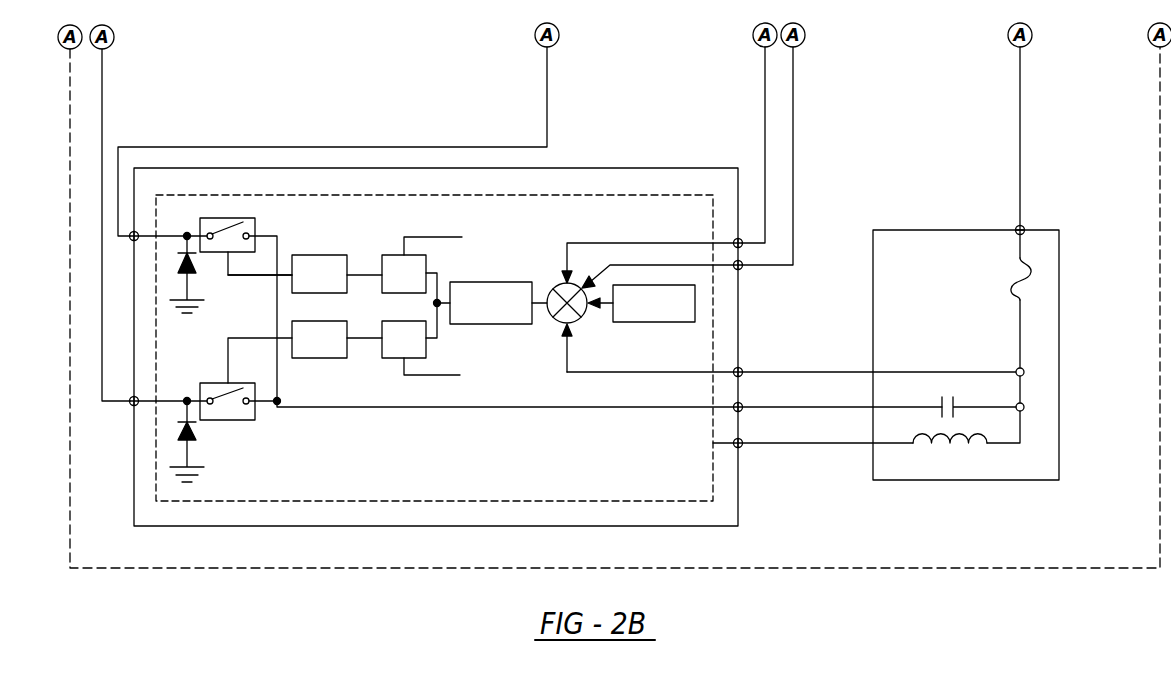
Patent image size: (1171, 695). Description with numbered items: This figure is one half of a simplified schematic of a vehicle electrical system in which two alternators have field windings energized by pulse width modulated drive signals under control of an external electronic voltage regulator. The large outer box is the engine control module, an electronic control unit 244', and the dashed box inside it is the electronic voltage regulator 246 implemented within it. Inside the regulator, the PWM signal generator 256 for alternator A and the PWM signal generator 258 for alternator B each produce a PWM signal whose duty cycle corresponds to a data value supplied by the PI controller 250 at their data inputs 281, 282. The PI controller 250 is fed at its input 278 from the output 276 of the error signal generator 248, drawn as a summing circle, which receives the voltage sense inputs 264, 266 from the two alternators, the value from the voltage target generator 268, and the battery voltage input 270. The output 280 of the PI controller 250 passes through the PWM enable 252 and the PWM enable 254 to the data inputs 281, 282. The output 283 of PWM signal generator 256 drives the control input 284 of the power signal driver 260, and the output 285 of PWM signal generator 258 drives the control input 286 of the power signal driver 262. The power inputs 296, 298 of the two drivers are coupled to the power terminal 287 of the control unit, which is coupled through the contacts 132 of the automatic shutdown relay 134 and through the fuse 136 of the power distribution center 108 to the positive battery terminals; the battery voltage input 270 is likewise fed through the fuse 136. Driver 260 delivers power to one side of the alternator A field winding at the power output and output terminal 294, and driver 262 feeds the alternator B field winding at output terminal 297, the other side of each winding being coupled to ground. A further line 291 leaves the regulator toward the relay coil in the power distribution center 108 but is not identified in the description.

The power distribution center 108 is at (1043, 230).
The contacts 132 is at (953, 395).
The automatic shutdown relay 134 is at (952, 448).
The fuse 136 is at (1030, 272).
The electronic control unit 244' is at (436, 303).
The electronic voltage regulator 246 is at (713, 482).
The error signal generator 248 is at (558, 326).
The PI controller 250 is at (513, 282).
The PWM enable 252 is at (426, 262).
The PWM enable 254 is at (427, 350).
The PWM signal generator 256 is at (348, 257).
The PWM signal generator 258 is at (313, 358).
The power signal driver 260 is at (200, 217).
The power signal driver 262 is at (223, 420).
The voltage sense input 264 is at (740, 240).
The voltage sense input 266 is at (742, 266).
The voltage target generator 268 is at (652, 322).
The battery voltage input 270 is at (742, 370).
The output 276 is at (548, 322).
The input 278 is at (542, 316).
The output 280 is at (450, 282).
The data input 281 is at (347, 285).
The data input 282 is at (347, 345).
The output 283 is at (290, 258).
The control input 284 is at (294, 350).
The output 285 is at (220, 253).
The control input 286 is at (227, 383).
The power terminal 287 is at (736, 410).
The return line 291 is at (742, 445).
The power output 294 is at (132, 231).
The power input 296 is at (250, 236).
The output terminal 297 is at (130, 404).
The power input 298 is at (257, 403).